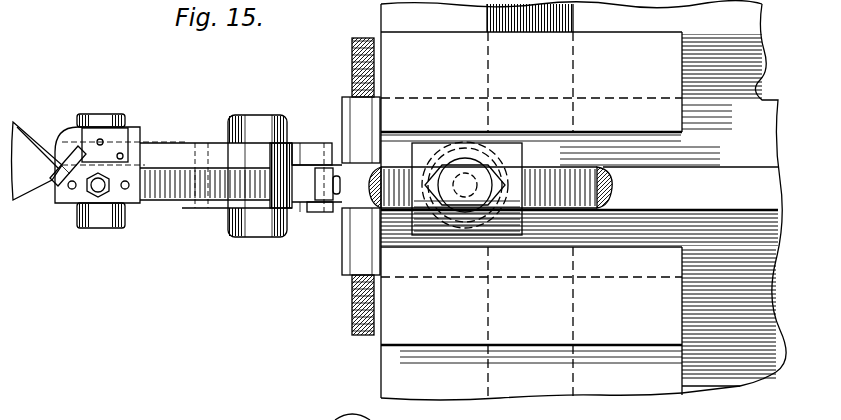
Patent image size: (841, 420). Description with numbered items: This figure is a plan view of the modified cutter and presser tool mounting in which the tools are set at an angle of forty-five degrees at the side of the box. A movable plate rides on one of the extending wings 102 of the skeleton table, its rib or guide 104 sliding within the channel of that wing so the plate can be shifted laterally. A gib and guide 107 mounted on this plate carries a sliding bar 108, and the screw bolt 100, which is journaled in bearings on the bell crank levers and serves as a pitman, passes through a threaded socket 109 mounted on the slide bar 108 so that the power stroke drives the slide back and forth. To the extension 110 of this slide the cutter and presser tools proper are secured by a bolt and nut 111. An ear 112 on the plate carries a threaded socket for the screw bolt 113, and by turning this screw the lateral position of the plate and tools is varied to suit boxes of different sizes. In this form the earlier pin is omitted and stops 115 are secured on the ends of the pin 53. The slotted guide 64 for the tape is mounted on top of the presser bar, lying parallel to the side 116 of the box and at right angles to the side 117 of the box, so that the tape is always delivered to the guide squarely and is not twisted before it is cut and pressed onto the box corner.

The pin 53 is at (300, 176).
The slotted guide 64 is at (78, 158).
The screw bolt 100 is at (586, 182).
The extending wing 102 is at (732, 335).
The rib or guide 104 is at (573, 16).
The gib and guide 107 is at (658, 56).
The sliding bar 108 is at (720, 135).
The threaded socket 109 is at (468, 194).
The extension 110 is at (218, 204).
The bolt and nut 111 is at (298, 105).
The ear 112 is at (350, 100).
The screw bolt 113 is at (352, 52).
The stops 115 is at (324, 204).
The side of the box 116 is at (34, 192).
The side of the box 117 is at (30, 138).